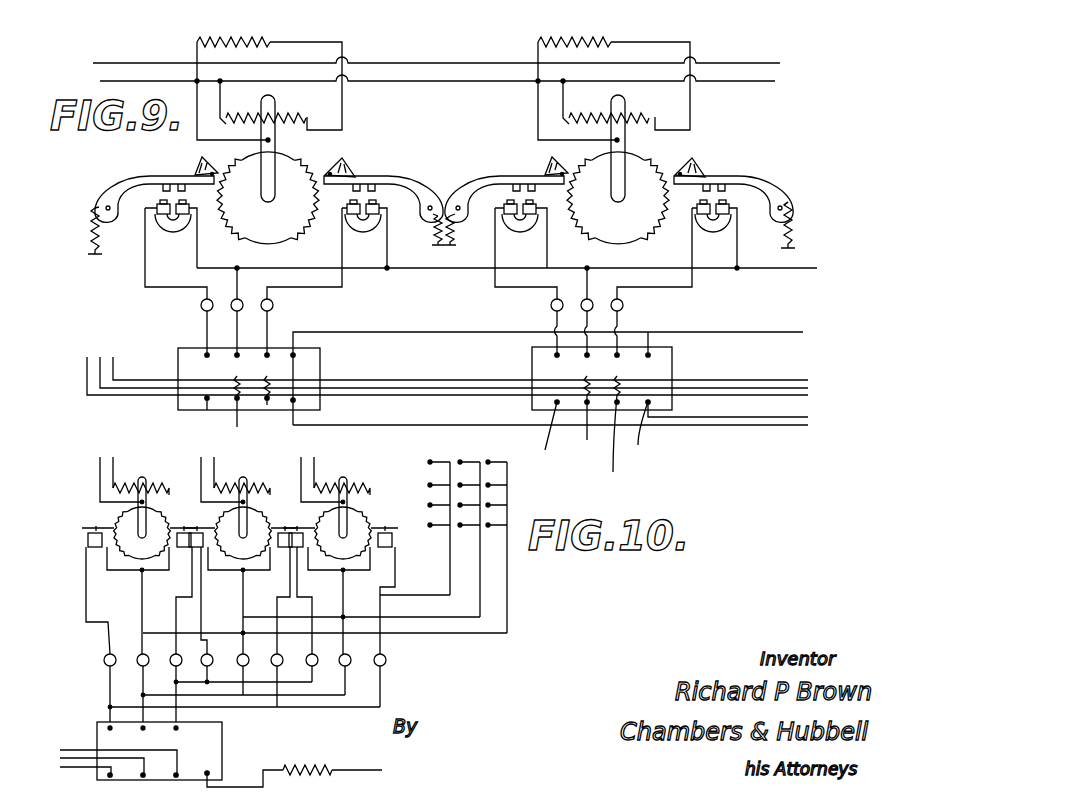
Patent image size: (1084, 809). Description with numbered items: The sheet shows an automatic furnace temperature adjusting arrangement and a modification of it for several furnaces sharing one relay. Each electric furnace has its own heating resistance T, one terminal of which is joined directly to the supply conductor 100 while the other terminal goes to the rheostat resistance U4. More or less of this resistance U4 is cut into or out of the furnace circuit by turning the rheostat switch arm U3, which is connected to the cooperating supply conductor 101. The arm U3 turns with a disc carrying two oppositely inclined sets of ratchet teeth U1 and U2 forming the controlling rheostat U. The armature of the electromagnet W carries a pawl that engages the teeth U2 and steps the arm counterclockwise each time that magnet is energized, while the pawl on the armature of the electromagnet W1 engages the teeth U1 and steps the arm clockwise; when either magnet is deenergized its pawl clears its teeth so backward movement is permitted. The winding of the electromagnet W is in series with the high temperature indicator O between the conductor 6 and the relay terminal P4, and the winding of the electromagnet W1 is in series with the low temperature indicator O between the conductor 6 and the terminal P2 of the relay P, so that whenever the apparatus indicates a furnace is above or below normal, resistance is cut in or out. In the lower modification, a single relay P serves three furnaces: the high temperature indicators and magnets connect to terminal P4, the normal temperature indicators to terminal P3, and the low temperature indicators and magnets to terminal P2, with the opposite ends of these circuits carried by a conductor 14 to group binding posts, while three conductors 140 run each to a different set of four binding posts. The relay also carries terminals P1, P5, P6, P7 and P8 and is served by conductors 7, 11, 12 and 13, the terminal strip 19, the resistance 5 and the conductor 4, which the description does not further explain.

In FIG. 9, the heating resistance T is at (228, 36).
In FIG. 9, the supply conductor 100 is at (386, 62).
In FIG. 9, the supply conductor 101 is at (373, 82).
In FIG. 9, the rheostat resistance U4 is at (294, 110).
In FIG. 9, the rheostat switch arm U3 is at (624, 142).
In FIG. 10, the rheostat switch arm U3 is at (160, 486).
In FIG. 9, the controlling rheostat U is at (443, 198).
In FIG. 10, the controlling rheostat U is at (243, 533).
In FIG. 9, the ratchet teeth U1 is at (494, 180).
In FIG. 9, the ratchet teeth U2 is at (400, 179).
In FIG. 9, the electromagnet W is at (160, 226).
In FIG. 10, the electromagnet W is at (92, 548).
In FIG. 9, the electromagnet W1 is at (375, 181).
In FIG. 10, the electromagnet W1 is at (184, 549).
In FIG. 9, the conductor 6 is at (780, 270).
In FIG. 9, the temperature indicator O is at (212, 311).
In FIG. 10, the temperature indicator O is at (112, 666).
In FIG. 9, the conductor 7 is at (455, 333).
In FIG. 9, the relay P is at (312, 365).
In FIG. 10, the relay P is at (159, 751).
In FIG. 9, the plug contact P1 is at (293, 357).
In FIG. 9, the relay terminal P2 is at (237, 357).
In FIG. 9, the relay terminal P3 is at (209, 357).
In FIG. 9, the relay terminal P4 is at (205, 354).
In FIG. 9, the relay terminal P5 is at (293, 400).
In FIG. 10, the relay terminal P5 is at (222, 770).
In FIG. 9, the plug contact P6 is at (267, 405).
In FIG. 10, the plug contact P6 is at (188, 790).
In FIG. 9, the plug contact P7 is at (413, 420).
In FIG. 10, the plug contact P7 is at (150, 788).
In FIG. 9, the plug contact P8 is at (207, 410).
In FIG. 10, the plug contact P8 is at (112, 777).
In FIG. 9, the conductor 11 is at (157, 379).
In FIG. 9, the conductor 12 is at (115, 389).
In FIG. 9, the conductor 13 is at (143, 396).
In FIG. 9, the conductor 14 is at (445, 425).
In FIG. 10, the terminal board 19 is at (430, 525).
In FIG. 10, the conductor 140 is at (437, 584).
In FIG. 10, the resistance 5 is at (307, 759).
In FIG. 10, the conductor 4 is at (365, 769).